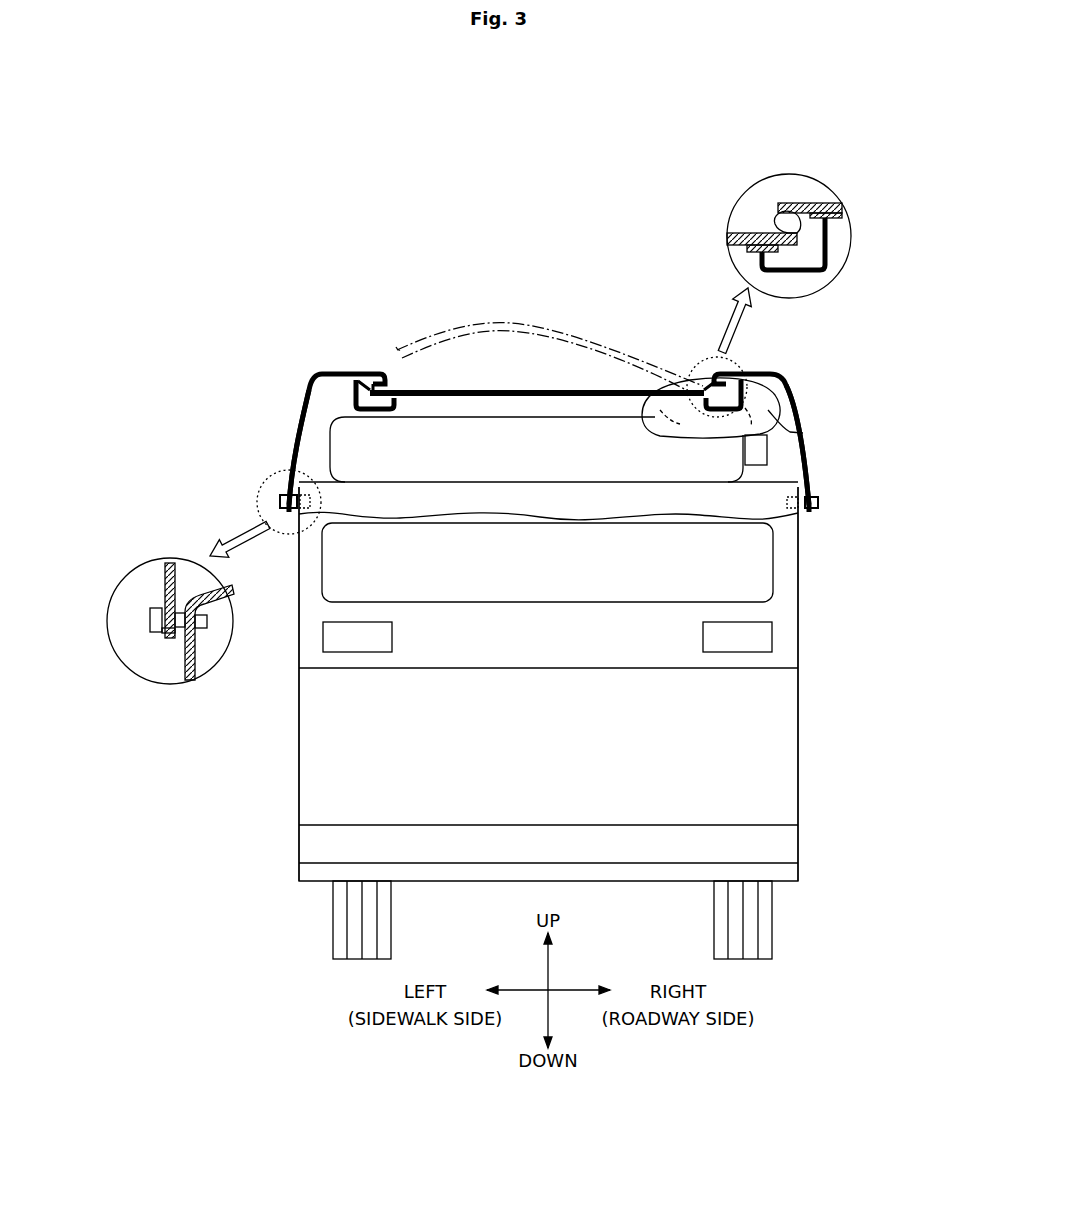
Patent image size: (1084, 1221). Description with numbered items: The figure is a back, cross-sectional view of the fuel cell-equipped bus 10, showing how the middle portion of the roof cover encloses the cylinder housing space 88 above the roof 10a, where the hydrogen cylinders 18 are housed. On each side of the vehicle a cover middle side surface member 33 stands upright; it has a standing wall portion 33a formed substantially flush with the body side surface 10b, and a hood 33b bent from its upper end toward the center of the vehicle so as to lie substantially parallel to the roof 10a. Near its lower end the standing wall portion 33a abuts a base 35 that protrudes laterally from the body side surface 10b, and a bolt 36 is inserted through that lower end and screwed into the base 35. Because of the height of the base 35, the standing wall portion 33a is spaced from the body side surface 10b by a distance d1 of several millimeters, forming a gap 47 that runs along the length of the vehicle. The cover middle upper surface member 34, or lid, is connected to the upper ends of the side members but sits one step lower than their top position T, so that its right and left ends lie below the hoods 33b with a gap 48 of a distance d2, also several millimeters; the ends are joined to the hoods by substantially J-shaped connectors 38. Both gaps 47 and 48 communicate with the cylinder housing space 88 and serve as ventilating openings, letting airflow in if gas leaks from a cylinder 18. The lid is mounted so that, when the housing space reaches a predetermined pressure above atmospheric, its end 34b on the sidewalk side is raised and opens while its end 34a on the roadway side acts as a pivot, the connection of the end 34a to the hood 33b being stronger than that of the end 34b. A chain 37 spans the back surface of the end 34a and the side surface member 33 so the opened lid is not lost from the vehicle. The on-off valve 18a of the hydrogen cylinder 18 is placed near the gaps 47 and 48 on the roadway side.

The fuel cell-equipped bus 10 is at (535, 307).
The roof 10a is at (397, 480).
The body side surface 10b is at (298, 600).
The hydrogen cylinder 18 is at (508, 425).
The on-off valve 18a is at (757, 448).
The cover middle side surface member 33 is at (317, 368).
The standing wall portion 33a is at (293, 433).
The hood 33b is at (343, 371).
The cover middle upper surface member 34 is at (473, 389).
The end on the roadway side 34a is at (788, 214).
The end on the sidewalk side 34b is at (378, 380).
The base 35 is at (288, 532).
The bolt 36 is at (280, 500).
The chain 37 is at (806, 440).
The connector 38 is at (357, 409).
The gap 47 is at (160, 633).
The gap 48 is at (775, 222).
The cylinder housing space 88 is at (463, 412).
The distance d1 is at (185, 657).
The distance d2 is at (727, 233).
The top position T is at (320, 372).